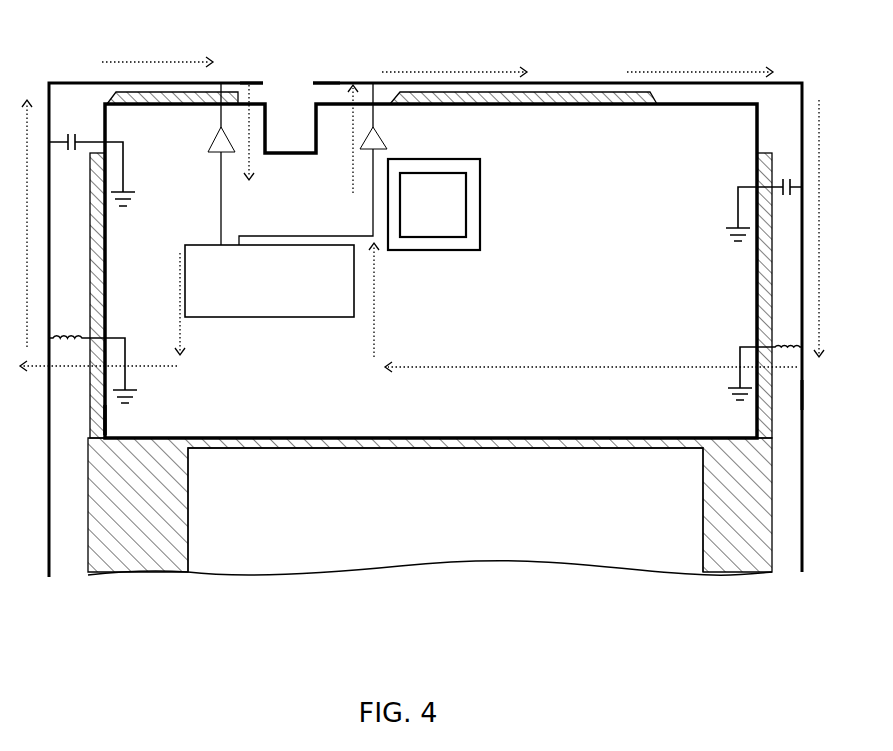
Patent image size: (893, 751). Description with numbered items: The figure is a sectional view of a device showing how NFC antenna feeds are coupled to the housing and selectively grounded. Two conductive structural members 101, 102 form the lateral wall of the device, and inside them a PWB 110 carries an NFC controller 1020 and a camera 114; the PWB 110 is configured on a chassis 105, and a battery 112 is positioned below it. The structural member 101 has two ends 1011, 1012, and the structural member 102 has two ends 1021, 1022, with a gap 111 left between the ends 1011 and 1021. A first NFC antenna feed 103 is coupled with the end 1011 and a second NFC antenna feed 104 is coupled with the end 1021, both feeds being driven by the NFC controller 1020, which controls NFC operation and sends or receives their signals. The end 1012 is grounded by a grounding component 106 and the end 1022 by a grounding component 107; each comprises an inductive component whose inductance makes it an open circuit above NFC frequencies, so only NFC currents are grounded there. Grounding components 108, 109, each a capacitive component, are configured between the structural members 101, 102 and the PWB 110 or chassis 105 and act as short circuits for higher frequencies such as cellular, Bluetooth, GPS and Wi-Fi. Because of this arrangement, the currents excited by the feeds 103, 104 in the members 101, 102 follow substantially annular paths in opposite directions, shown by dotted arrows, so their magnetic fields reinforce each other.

The conductive structural member 101 is at (83, 82).
The conductive structural member 102 is at (712, 83).
The end of structural member 1011 is at (262, 80).
The end of structural member 1021 is at (323, 80).
The gap 111 is at (295, 82).
The PWB 110 is at (603, 118).
The first NFC antenna feed 103 is at (215, 143).
The second NFC antenna feed 104 is at (390, 135).
The grounding component 108 is at (78, 128).
The grounding component 109 is at (782, 175).
The grounding component 106 is at (78, 323).
The grounding component 107 is at (782, 332).
The camera 114 is at (480, 213).
The NFC controller 1020 is at (185, 263).
The end of structural member 1012 is at (55, 410).
The end of structural member 1022 is at (802, 392).
The battery 112 is at (445, 510).
The chassis 105 is at (753, 550).